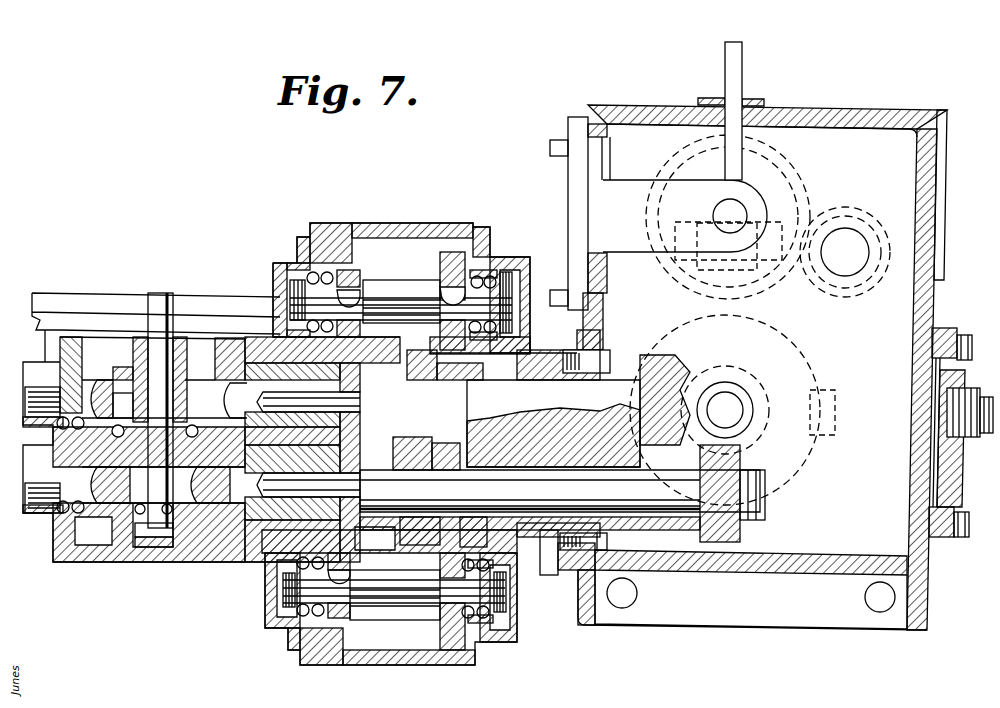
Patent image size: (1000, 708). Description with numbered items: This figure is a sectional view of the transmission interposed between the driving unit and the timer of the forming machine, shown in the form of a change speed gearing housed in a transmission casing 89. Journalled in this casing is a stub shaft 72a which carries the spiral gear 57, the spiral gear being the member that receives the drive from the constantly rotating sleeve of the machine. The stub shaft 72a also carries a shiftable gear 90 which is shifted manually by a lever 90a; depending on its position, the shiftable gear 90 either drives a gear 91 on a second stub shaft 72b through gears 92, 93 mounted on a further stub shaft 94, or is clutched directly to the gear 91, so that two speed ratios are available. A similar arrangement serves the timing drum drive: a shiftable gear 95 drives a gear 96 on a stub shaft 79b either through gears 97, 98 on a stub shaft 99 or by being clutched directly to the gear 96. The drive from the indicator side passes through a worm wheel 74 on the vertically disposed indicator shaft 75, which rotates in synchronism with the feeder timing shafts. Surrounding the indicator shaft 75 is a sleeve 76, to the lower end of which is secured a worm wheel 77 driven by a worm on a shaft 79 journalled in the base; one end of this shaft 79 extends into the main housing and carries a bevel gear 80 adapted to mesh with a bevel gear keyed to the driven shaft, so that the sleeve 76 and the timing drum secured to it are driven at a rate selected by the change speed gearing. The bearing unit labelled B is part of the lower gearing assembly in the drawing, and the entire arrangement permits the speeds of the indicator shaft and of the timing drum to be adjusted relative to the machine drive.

The spiral gear 57 is at (742, 522).
The stub shaft 72a is at (508, 491).
The stub shaft 72b is at (238, 500).
The worm wheel 74 is at (115, 492).
The indicator shaft 75 is at (160, 338).
The sleeve 76 is at (140, 336).
The worm wheel 77 is at (105, 375).
The shaft 79 is at (553, 423).
The stub shaft 79b is at (241, 338).
The bevel gear 80 is at (682, 363).
The transmission casing 89 is at (418, 224).
The shiftable gear 90 is at (430, 540).
The lever 90a is at (360, 441).
The gear 91 is at (340, 548).
The gear 92 is at (440, 625).
The gear 93 is at (331, 624).
The stub shaft 94 is at (395, 594).
The shiftable gear 95 is at (452, 378).
The gear 96 is at (358, 373).
The gear 97 is at (461, 249).
The gear 98 is at (349, 263).
The stub shaft 99 is at (398, 290).
The bearing unit B is at (409, 650).